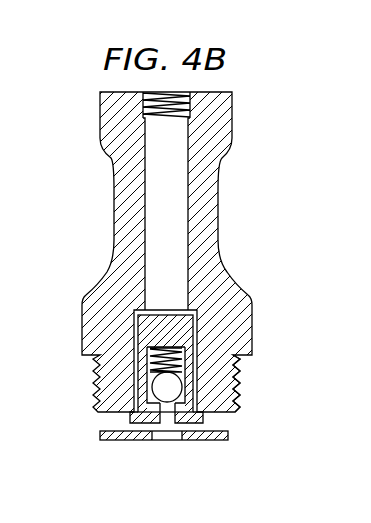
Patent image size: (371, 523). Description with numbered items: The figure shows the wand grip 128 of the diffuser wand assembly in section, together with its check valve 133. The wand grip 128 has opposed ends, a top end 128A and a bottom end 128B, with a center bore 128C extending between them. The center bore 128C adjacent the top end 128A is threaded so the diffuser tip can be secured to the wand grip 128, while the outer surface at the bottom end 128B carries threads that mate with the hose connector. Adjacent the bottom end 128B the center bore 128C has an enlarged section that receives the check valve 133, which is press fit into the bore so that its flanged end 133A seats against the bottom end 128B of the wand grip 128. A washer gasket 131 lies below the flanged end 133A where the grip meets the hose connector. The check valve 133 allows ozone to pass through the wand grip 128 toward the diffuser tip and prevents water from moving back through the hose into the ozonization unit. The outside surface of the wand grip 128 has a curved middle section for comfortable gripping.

The wand grip 128 is at (113, 224).
The top end 128A is at (223, 91).
The bottom end 128B is at (240, 390).
The center bore 128C is at (175, 229).
The washer gasket 131 is at (198, 441).
The check valve 133 is at (187, 382).
The flanged end 133A is at (130, 420).